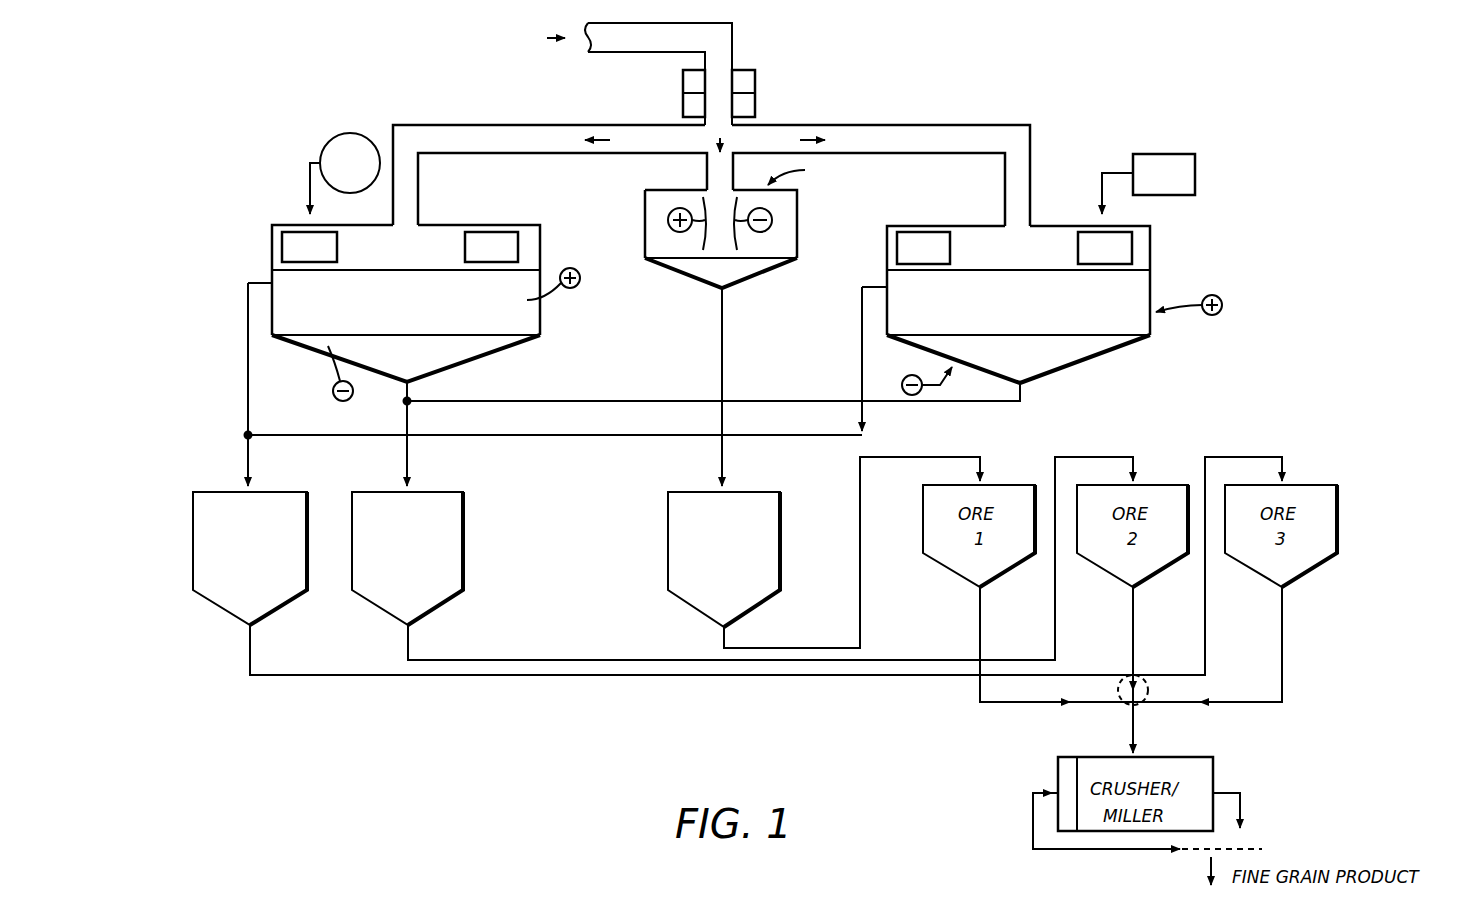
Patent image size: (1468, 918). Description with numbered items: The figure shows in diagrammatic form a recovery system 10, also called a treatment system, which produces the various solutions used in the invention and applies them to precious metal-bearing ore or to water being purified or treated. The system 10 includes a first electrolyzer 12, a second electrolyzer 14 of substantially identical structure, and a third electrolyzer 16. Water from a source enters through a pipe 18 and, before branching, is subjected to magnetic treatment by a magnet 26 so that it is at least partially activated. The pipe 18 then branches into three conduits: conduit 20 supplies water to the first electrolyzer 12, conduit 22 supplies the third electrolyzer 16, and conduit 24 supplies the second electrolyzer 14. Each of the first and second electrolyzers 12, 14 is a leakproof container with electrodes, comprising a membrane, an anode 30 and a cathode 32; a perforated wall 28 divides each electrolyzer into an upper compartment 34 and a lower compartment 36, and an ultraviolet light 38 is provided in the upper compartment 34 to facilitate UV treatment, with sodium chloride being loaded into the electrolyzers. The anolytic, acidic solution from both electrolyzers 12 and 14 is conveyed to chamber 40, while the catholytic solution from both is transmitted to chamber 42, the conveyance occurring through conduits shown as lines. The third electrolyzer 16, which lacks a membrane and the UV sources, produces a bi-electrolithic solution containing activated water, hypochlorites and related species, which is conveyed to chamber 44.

The recovery system 10 is at (252, 120).
The first electrolyzer 12 is at (268, 250).
The second electrolyzer 14 is at (1058, 378).
The third electrolyzer 16 is at (680, 278).
The pipe 18 is at (623, 37).
The conduit 20 is at (537, 125).
The conduit 22 is at (712, 178).
The conduit 24 is at (877, 125).
The magnet 26 is at (755, 52).
The perforated wall 28 is at (283, 327).
The anode 30 is at (295, 300).
The cathode 32 is at (305, 338).
The upper compartment 34 is at (385, 263).
The lower compartment 36 is at (325, 346).
The ultraviolet light 38 is at (292, 232).
The chamber 40 is at (193, 542).
The chamber 42 is at (430, 598).
The chamber 44 is at (700, 598).